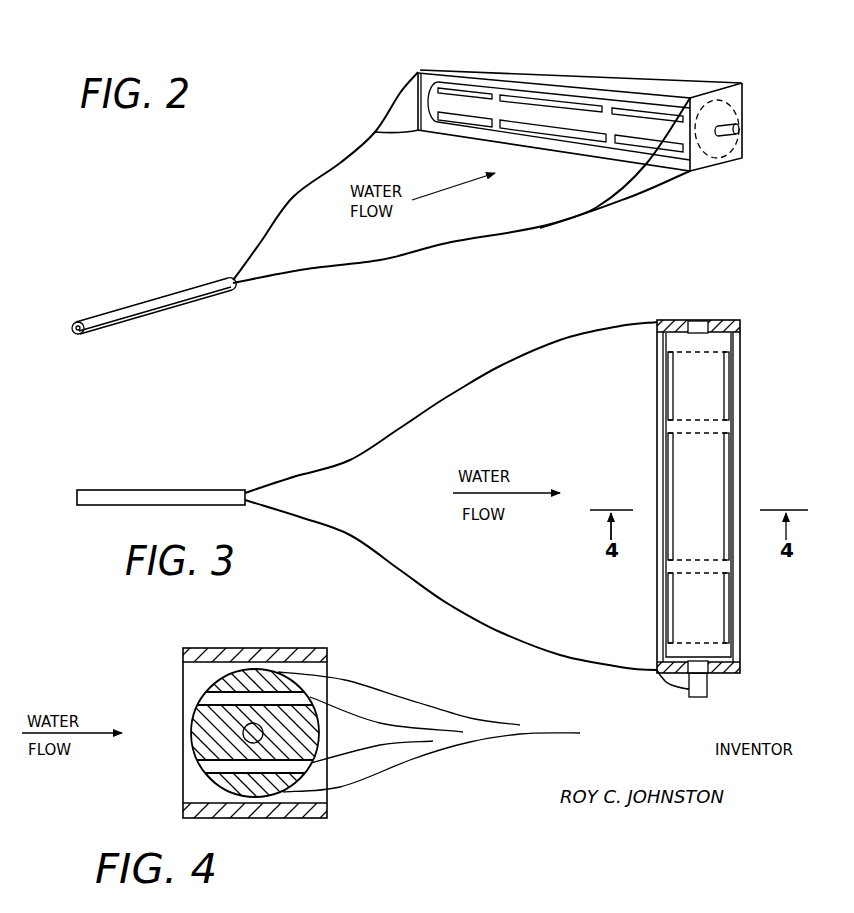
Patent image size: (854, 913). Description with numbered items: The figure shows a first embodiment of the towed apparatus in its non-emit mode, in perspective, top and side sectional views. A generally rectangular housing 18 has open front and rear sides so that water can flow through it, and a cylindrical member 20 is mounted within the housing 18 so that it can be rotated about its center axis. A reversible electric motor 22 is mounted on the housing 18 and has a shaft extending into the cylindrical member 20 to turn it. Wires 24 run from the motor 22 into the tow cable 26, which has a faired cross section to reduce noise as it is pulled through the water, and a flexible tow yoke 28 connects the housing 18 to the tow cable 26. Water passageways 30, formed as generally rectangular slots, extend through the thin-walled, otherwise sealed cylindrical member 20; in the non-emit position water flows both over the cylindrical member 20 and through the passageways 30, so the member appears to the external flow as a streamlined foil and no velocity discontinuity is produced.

In FIG. 2, the housing 18 is at (572, 72).
In FIG. 3, the housing 18 is at (725, 321).
In FIG. 4, the housing 18 is at (220, 650).
In FIG. 2, the cylindrical member 20 is at (462, 85).
In FIG. 3, the cylindrical member 20 is at (713, 378).
In FIG. 4, the cylindrical member 20 is at (258, 675).
In FIG. 2, the reversible electric motor 22 is at (738, 128).
In FIG. 3, the reversible electric motor 22 is at (708, 685).
In FIG. 2, the wires 24 is at (440, 247).
In FIG. 3, the wires 24 is at (669, 682).
In FIG. 2, the tow cable 26 is at (173, 300).
In FIG. 3, the tow cable 26 is at (161, 477).
In FIG. 2, the flexible tow yoke 28 is at (366, 131).
In FIG. 3, the flexible tow yoke 28 is at (474, 383).
In FIG. 4, the flexible tow yoke 28 is at (429, 732).
In FIG. 2, the water passageways 30 is at (482, 98).
In FIG. 3, the water passageways 30 is at (723, 416).
In FIG. 4, the water passageways 30 is at (292, 702).